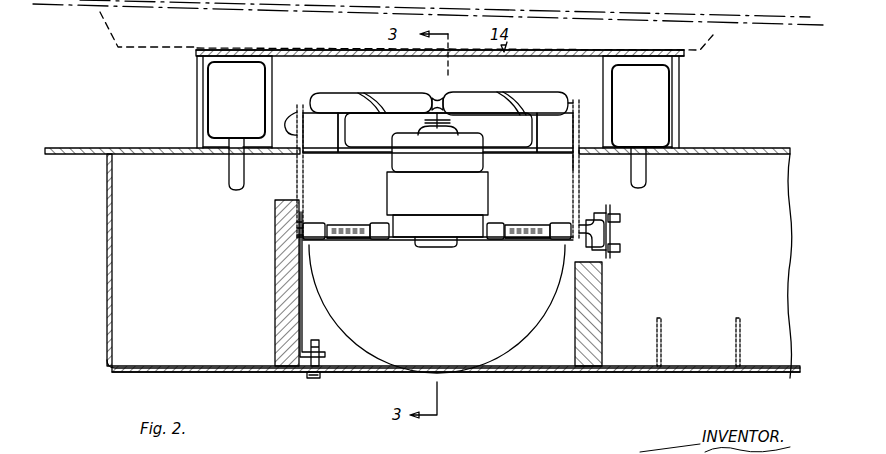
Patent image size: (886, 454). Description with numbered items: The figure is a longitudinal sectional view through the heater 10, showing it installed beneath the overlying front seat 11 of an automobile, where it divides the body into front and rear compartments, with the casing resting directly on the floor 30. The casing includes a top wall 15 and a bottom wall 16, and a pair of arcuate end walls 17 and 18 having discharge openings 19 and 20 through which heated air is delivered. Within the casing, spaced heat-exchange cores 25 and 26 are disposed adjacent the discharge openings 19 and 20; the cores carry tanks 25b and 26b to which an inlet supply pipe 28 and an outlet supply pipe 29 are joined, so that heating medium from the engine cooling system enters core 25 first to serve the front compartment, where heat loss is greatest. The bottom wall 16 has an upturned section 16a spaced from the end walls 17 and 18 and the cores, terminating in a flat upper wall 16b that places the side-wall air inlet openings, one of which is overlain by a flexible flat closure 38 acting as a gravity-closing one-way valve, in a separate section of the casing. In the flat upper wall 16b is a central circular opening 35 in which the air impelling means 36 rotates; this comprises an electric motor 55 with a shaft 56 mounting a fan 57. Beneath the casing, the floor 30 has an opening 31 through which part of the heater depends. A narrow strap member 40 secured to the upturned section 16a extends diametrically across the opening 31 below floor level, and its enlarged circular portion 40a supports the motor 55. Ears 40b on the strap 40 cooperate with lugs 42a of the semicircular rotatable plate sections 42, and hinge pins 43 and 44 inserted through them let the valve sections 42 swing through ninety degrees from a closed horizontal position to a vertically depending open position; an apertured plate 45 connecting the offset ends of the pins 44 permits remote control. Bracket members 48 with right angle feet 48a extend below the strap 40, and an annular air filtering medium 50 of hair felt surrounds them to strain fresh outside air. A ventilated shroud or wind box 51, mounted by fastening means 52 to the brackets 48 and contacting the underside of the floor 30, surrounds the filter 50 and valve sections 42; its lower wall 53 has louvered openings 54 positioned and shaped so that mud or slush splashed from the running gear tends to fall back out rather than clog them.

The heater 10 is at (200, 48).
The front seat 11 is at (100, 33).
The top wall 15 is at (296, 50).
The bottom wall 16 is at (200, 138).
The upturned section 16a is at (300, 140).
The flat upper wall 16b is at (312, 95).
The arcuate end wall 17 is at (197, 107).
The arcuate end wall 18 is at (679, 110).
The discharge opening 19 is at (197, 57).
The discharge opening 20 is at (681, 56).
The heat-exchange core 25 is at (272, 75).
The tank 25b is at (265, 122).
The heat-exchange core 26 is at (603, 77).
The tank 26b is at (669, 116).
The inlet supply pipe 28 is at (229, 180).
The outlet supply pipe 29 is at (646, 178).
The floor 30 is at (140, 155).
The opening 31 is at (582, 160).
The central circular opening 35 is at (573, 100).
The air impelling means 36 is at (448, 165).
The flexible flat closure 38 is at (385, 140).
The strap member 40 is at (303, 172).
The enlarged circular portion 40a is at (412, 247).
The ears 40b is at (378, 223).
The rotatable plate sections 42 is at (495, 352).
The lugs 42a is at (350, 240).
The hinge pin 43 is at (333, 241).
The hinge pin 44 is at (620, 217).
The apertured plate 45 is at (610, 233).
The bracket members 48 is at (305, 308).
The right angle feet 48a is at (320, 355).
The air filtering medium 50 is at (275, 300).
The shroud or wind box 51 is at (112, 258).
The fastening means 52 is at (314, 379).
The lower wall 53 is at (138, 368).
The louvered openings 54 is at (736, 345).
The electric motor 55 is at (393, 202).
The shaft 56 is at (450, 124).
The fan 57 is at (515, 100).